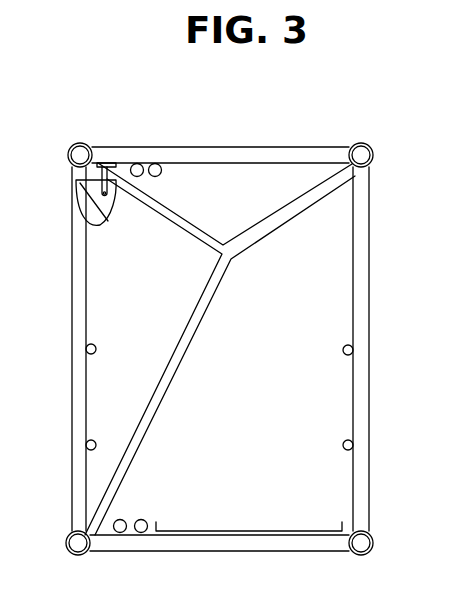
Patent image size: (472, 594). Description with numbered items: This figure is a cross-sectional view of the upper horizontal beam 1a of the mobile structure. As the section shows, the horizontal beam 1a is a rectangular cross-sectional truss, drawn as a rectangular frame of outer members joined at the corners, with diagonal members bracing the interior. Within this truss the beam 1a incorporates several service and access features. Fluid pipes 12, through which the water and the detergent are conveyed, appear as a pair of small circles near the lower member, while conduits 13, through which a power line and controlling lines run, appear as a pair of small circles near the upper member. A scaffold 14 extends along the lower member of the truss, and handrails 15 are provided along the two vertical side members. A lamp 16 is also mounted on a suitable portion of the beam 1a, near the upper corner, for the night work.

The upper horizontal beam 1a is at (334, 141).
The fluid pipes 12 is at (123, 518).
The conduits 13 is at (143, 163).
The scaffold 14 is at (265, 532).
The handrails 15 is at (86, 349).
The lamps 16 is at (78, 205).